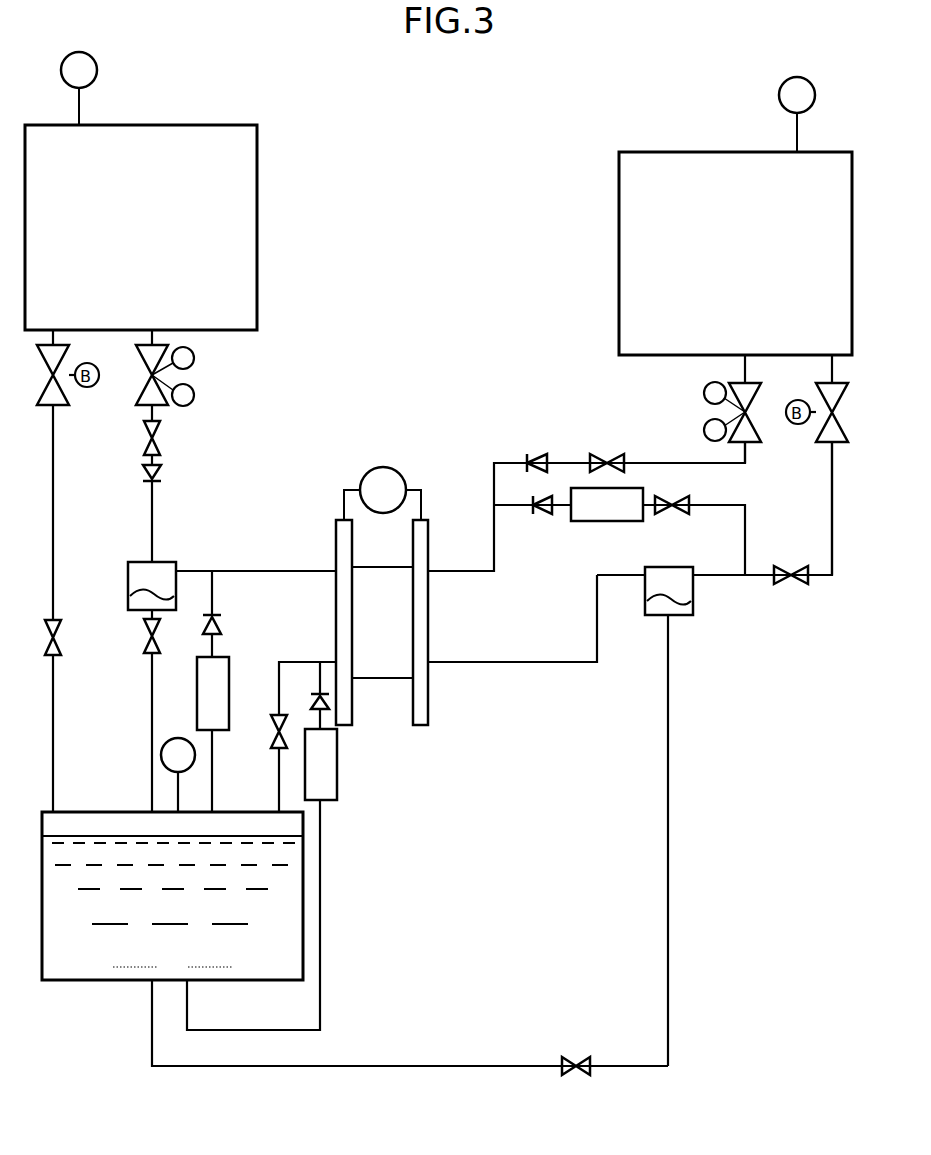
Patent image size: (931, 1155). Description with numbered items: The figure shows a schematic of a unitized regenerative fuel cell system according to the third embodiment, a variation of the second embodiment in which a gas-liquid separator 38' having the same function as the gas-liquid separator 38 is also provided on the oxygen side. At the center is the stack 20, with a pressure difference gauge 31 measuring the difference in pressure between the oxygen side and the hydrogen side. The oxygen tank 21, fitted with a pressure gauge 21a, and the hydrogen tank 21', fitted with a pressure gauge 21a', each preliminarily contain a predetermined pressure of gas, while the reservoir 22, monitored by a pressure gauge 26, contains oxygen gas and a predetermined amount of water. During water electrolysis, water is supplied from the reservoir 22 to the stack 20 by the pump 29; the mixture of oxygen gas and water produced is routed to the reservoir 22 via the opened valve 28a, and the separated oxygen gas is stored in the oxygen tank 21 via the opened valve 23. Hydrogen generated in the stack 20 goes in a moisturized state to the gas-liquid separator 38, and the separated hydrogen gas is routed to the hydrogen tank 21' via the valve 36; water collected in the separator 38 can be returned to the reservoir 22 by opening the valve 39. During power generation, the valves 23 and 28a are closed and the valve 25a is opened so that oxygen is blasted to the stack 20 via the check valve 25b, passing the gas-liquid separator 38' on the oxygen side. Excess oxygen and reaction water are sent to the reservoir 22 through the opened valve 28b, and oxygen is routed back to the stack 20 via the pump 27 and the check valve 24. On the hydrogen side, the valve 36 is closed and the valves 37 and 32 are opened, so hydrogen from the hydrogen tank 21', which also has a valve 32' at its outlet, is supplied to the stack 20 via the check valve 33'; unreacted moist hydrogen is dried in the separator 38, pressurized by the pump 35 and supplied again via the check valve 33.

The stack 20 is at (382, 622).
The oxygen tank 21 is at (141, 198).
The pressure gauge 21a is at (117, 80).
The hydrogen tank 21' is at (735, 220).
The pressure gauge 21a' is at (770, 101).
The reservoir 22 is at (100, 810).
The valve 23 is at (58, 628).
The check valve 24 is at (220, 626).
The valve 25a is at (160, 440).
The check valve 25b is at (160, 474).
The pressure gauge 26 is at (176, 738).
The pump 27 is at (196, 688).
The valve 28a is at (145, 636).
The valve 28b is at (276, 752).
The pump 29 is at (338, 786).
The pressure difference gauge 31 is at (374, 468).
The valve 32 is at (602, 446).
The valve 32' is at (698, 409).
The check valve 33 is at (548, 535).
The check valve 33' is at (543, 439).
The pump 35 is at (585, 522).
The valve 36 is at (792, 568).
The valve 37 is at (672, 513).
The gas-liquid separator 38 is at (699, 816).
The gas-liquid separator 38' is at (139, 561).
The valve 39 is at (578, 1060).